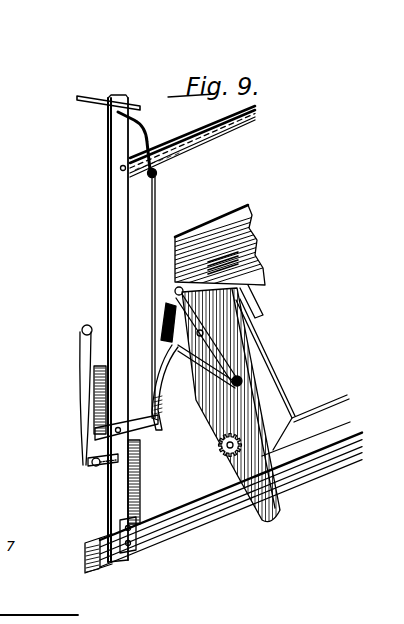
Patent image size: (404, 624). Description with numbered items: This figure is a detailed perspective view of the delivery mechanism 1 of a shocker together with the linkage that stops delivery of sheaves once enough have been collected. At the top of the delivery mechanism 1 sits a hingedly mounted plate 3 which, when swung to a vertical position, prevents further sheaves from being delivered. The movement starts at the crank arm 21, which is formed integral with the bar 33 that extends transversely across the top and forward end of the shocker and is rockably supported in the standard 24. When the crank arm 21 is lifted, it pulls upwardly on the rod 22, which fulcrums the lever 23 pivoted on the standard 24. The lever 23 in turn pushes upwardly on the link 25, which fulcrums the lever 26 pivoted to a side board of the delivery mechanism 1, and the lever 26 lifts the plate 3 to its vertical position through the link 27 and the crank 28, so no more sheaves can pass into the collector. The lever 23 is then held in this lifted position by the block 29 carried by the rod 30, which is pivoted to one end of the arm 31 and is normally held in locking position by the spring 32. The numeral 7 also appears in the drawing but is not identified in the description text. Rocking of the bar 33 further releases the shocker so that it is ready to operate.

The delivery mechanism 1 is at (285, 506).
The hingedly mounted plate 3 is at (240, 222).
The rail 7 is at (166, 530).
The crank arm 21 is at (160, 173).
The rod 22 is at (157, 210).
The lever 23 is at (139, 456).
The standard 24 is at (112, 230).
The link 25 is at (162, 402).
The lever 26 is at (233, 255).
The link 27 is at (172, 291).
The crank 28 is at (162, 325).
The block 29 is at (100, 402).
The rod 30 is at (94, 432).
The arm 31 is at (80, 333).
The spring 32 is at (96, 470).
The bar 33 is at (97, 106).